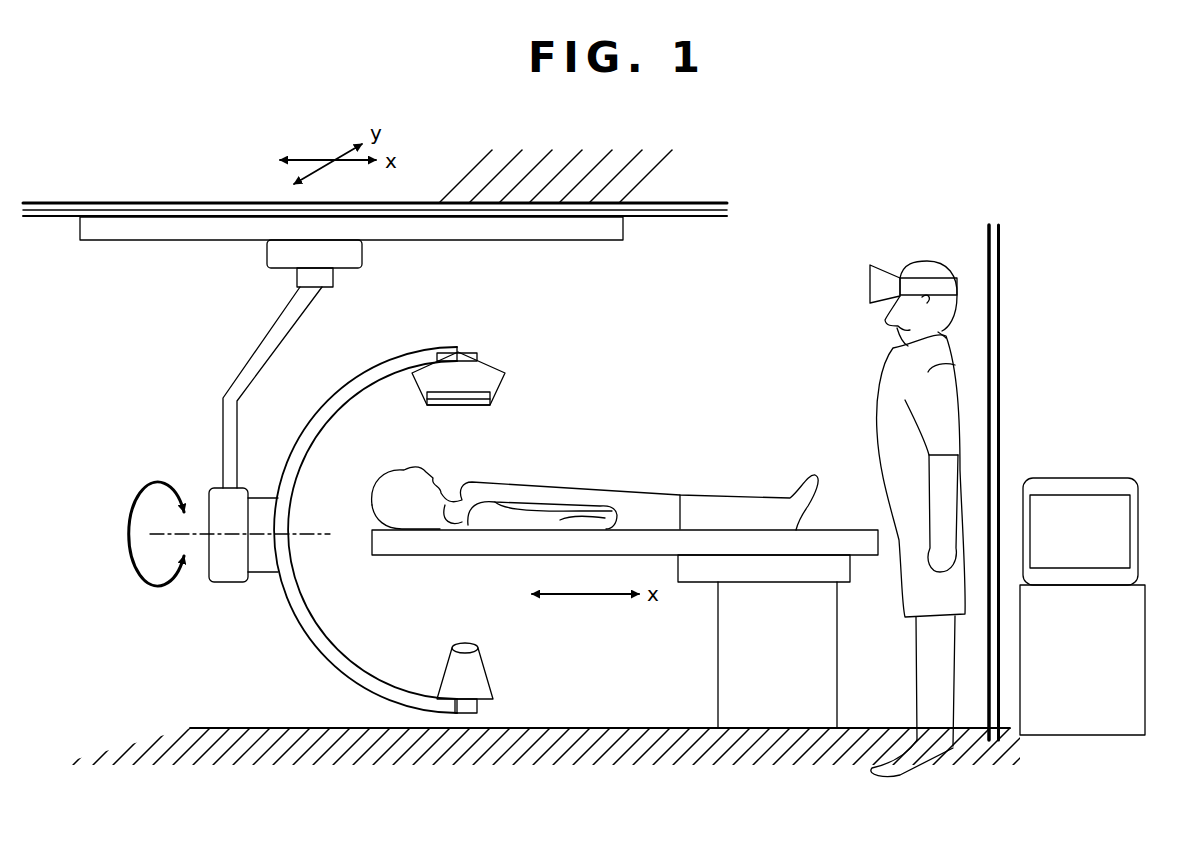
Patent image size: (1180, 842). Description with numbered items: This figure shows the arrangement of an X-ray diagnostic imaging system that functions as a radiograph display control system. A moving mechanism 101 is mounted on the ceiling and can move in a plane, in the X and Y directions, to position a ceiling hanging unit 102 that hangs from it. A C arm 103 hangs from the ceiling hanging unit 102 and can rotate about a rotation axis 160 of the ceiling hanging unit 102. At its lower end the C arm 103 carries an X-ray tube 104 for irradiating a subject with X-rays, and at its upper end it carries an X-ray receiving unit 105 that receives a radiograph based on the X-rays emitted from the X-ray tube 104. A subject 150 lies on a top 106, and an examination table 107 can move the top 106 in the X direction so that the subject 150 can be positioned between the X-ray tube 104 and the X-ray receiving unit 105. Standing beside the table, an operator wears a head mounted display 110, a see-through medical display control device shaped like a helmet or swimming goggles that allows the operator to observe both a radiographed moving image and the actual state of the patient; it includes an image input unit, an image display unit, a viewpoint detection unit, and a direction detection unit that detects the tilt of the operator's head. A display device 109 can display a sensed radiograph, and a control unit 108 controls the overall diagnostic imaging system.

The moving mechanism 101 is at (113, 248).
The ceiling hanging unit 102 is at (258, 350).
The C arm 103 is at (307, 640).
The X-ray tube 104 is at (493, 690).
The X-ray receiving unit 105 is at (495, 363).
The top 106 is at (428, 558).
The examination table 107 is at (718, 690).
The control unit 108 is at (1083, 725).
The display device 109 is at (1085, 508).
The head mounted display 110 is at (880, 275).
The subject 150 is at (558, 483).
The rotation axis 160 is at (188, 525).